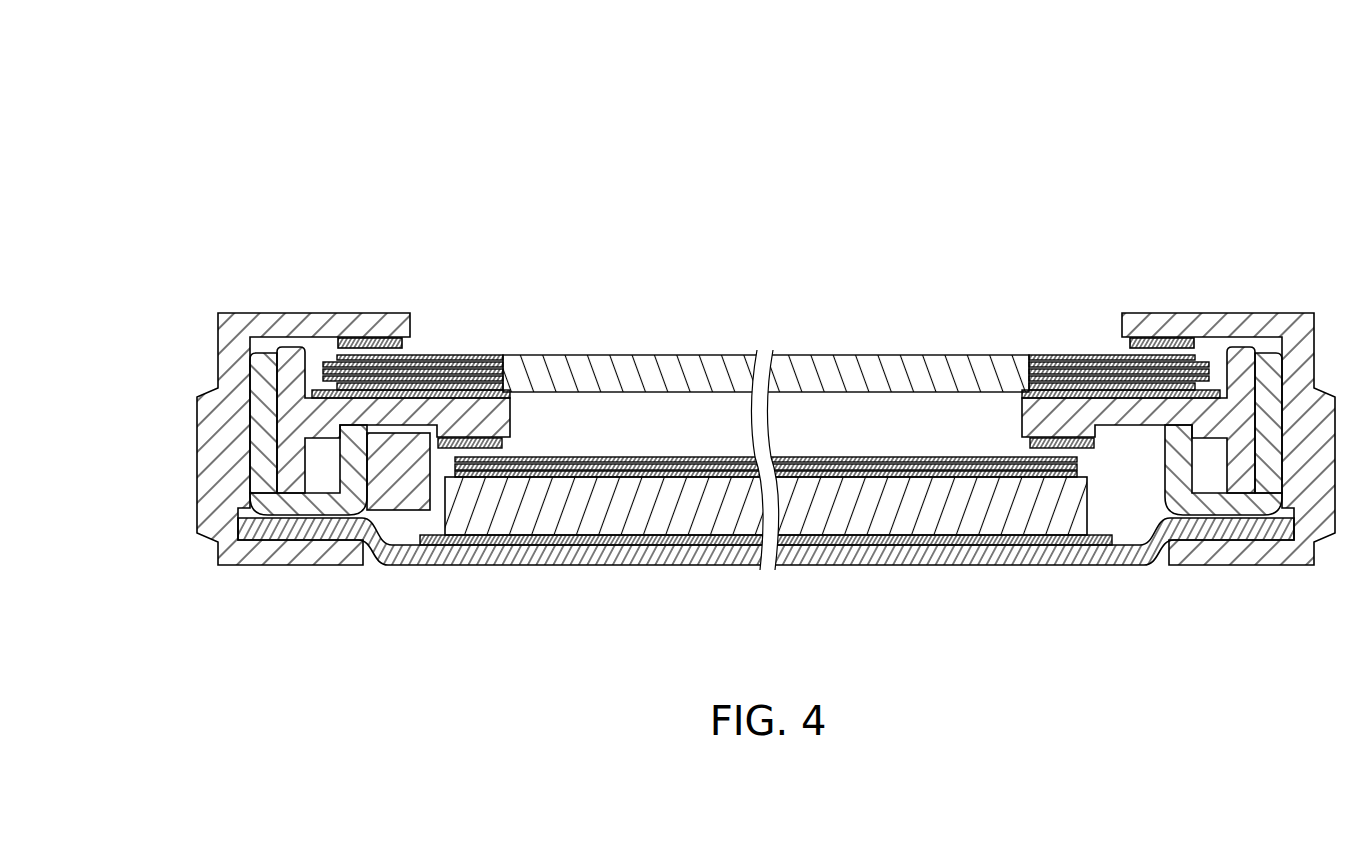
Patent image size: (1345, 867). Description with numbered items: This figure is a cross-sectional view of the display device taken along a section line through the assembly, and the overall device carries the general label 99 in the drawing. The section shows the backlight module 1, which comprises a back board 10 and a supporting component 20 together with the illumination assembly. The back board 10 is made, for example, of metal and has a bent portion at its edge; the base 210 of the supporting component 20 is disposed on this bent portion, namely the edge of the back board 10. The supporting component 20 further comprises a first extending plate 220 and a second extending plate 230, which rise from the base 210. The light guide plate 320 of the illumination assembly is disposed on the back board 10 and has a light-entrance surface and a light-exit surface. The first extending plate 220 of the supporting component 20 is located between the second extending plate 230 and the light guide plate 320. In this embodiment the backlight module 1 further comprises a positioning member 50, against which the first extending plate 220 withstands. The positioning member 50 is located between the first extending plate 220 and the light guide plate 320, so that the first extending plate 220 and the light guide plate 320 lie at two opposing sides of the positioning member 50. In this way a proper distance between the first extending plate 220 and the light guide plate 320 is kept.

The display device 99 is at (251, 184).
The backlight module 1 is at (481, 580).
The back board 10 is at (654, 555).
The supporting component 20 is at (710, 518).
The base 210 is at (766, 534).
The first extending plate 220 is at (352, 483).
The second extending plate 230 is at (262, 452).
The positioning member 50 is at (400, 483).
The light guide plate 320 is at (583, 512).